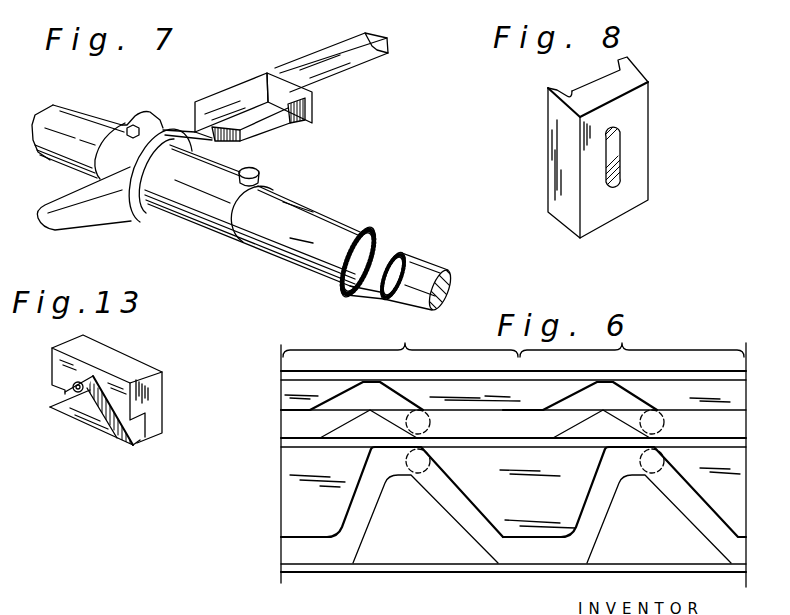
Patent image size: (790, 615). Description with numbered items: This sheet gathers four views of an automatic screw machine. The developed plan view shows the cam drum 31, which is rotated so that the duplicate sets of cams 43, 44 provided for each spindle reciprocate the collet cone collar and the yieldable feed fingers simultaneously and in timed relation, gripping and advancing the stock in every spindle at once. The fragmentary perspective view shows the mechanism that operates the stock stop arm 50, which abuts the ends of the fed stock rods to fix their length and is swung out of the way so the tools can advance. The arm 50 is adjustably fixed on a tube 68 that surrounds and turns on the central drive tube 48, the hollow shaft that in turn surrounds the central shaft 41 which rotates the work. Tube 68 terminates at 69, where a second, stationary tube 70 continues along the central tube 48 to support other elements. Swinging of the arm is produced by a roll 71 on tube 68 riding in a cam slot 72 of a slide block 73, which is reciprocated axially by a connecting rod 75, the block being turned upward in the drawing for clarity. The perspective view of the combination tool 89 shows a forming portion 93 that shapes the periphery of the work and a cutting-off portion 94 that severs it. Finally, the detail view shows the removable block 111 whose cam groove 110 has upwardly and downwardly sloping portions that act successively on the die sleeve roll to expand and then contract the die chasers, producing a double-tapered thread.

In FIG. 6, the cam drum 31 is at (498, 581).
In FIG. 7, the central shaft 41 is at (423, 275).
In FIG. 6, the cams 43 is at (399, 445).
In FIG. 6, the cams 44 is at (624, 447).
In FIG. 7, the central drive tube 48 is at (398, 253).
In FIG. 7, the stock stop arm 50 is at (117, 212).
In FIG. 7, the tube 68 is at (97, 118).
In FIG. 7, the termination of tube 68 69 is at (258, 204).
In FIG. 7, the second tube 70 is at (293, 267).
In FIG. 7, the roll 71 is at (261, 174).
In FIG. 7, the cam slot 72 is at (272, 117).
In FIG. 7, the slide block 73 is at (252, 87).
In FIG. 7, the connecting rod 75 is at (343, 67).
In FIG. 8, the tool 89 is at (648, 110).
In FIG. 8, the forming portion 93 is at (620, 58).
In FIG. 8, the cutting-off portion 94 is at (549, 88).
In FIG. 13, the cam groove 110 is at (125, 427).
In FIG. 13, the block 111 is at (157, 393).